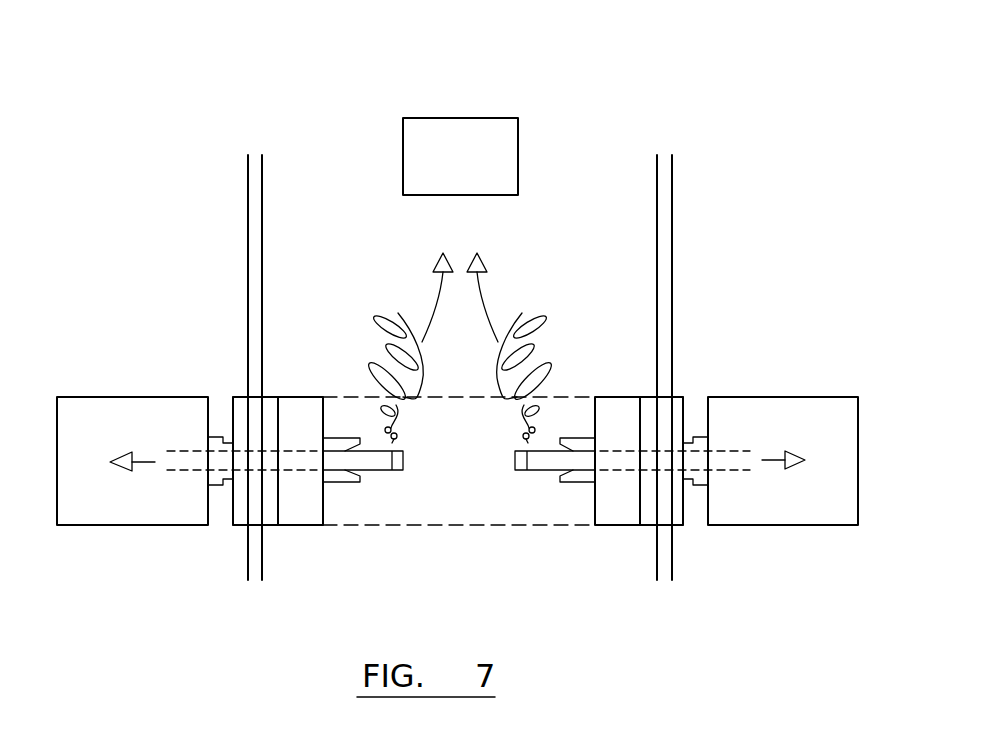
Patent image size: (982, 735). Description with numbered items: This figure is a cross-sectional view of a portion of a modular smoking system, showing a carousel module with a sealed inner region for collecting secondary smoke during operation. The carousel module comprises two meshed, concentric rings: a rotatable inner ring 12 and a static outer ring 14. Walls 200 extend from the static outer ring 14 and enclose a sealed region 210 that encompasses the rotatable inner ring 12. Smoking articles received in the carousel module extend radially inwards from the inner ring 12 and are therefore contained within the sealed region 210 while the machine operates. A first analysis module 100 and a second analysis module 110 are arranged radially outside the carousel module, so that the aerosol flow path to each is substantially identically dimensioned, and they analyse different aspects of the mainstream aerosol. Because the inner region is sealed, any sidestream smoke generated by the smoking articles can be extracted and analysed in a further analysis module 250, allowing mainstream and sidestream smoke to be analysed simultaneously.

The inner ring 12 is at (619, 508).
The outer ring 14 is at (676, 410).
The first analysis module 100 is at (820, 410).
The second analysis module 110 is at (134, 397).
The walls 200 is at (255, 236).
The sealed region 210 is at (582, 233).
The further analysis module 250 is at (468, 138).